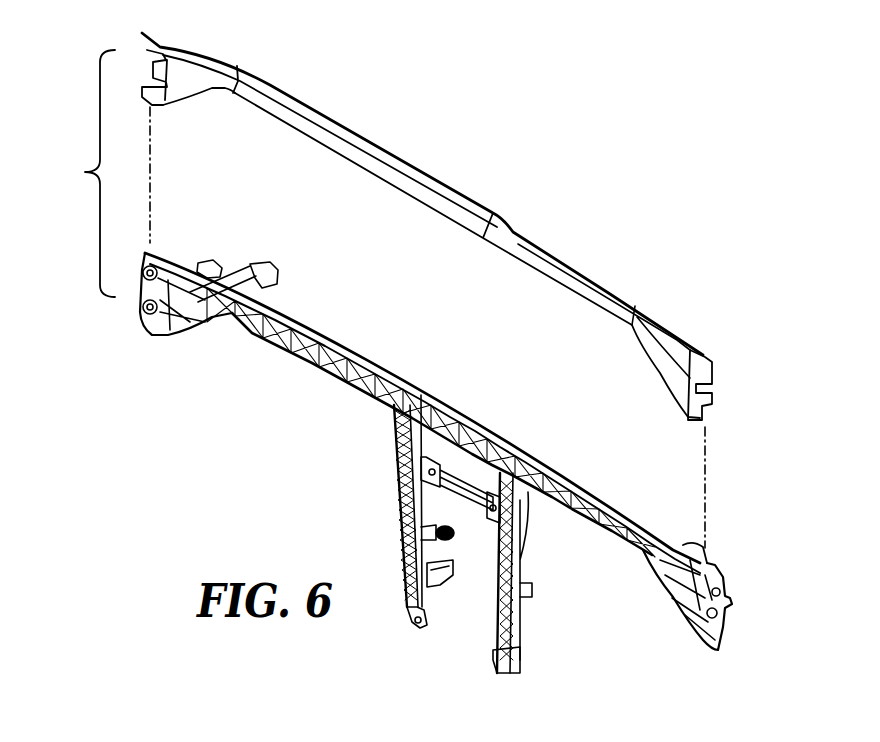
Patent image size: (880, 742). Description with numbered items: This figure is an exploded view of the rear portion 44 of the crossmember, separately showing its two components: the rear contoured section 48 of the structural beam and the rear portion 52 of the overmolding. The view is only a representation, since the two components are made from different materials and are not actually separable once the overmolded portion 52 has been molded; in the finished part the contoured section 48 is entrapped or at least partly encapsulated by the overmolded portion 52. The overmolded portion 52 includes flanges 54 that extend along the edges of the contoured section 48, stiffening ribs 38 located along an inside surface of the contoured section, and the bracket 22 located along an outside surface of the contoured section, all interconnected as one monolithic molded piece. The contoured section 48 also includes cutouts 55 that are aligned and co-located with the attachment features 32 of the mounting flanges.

The rear portion 44 is at (376, 299).
The rear contoured section 48 is at (448, 230).
The cutouts 55 is at (703, 398).
The rear portion of the overmolding 52 is at (312, 321).
The flanges 54 is at (420, 463).
The stiffening ribs 38 is at (420, 393).
The bracket 22 is at (403, 537).
The attachment features 32 is at (722, 577).